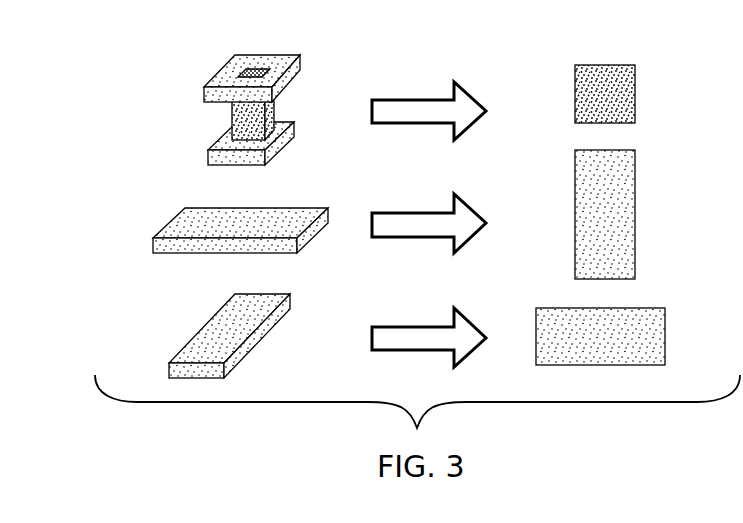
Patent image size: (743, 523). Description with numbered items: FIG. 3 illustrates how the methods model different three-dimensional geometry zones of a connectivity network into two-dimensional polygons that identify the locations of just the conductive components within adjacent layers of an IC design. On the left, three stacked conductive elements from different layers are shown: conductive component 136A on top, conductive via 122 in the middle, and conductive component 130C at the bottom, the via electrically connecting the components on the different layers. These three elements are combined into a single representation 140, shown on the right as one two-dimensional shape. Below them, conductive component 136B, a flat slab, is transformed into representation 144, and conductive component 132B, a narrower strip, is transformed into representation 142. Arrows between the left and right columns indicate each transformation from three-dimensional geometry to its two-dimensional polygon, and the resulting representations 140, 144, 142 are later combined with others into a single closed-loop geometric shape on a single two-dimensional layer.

The conductive component 136A is at (232, 63).
The conductive via 122 is at (232, 117).
The conductive component 130C is at (208, 153).
The conductive component 136B is at (172, 228).
The conductive component 132B is at (202, 330).
The representation 140 is at (636, 92).
The representation 144 is at (636, 213).
The representation 142 is at (666, 335).